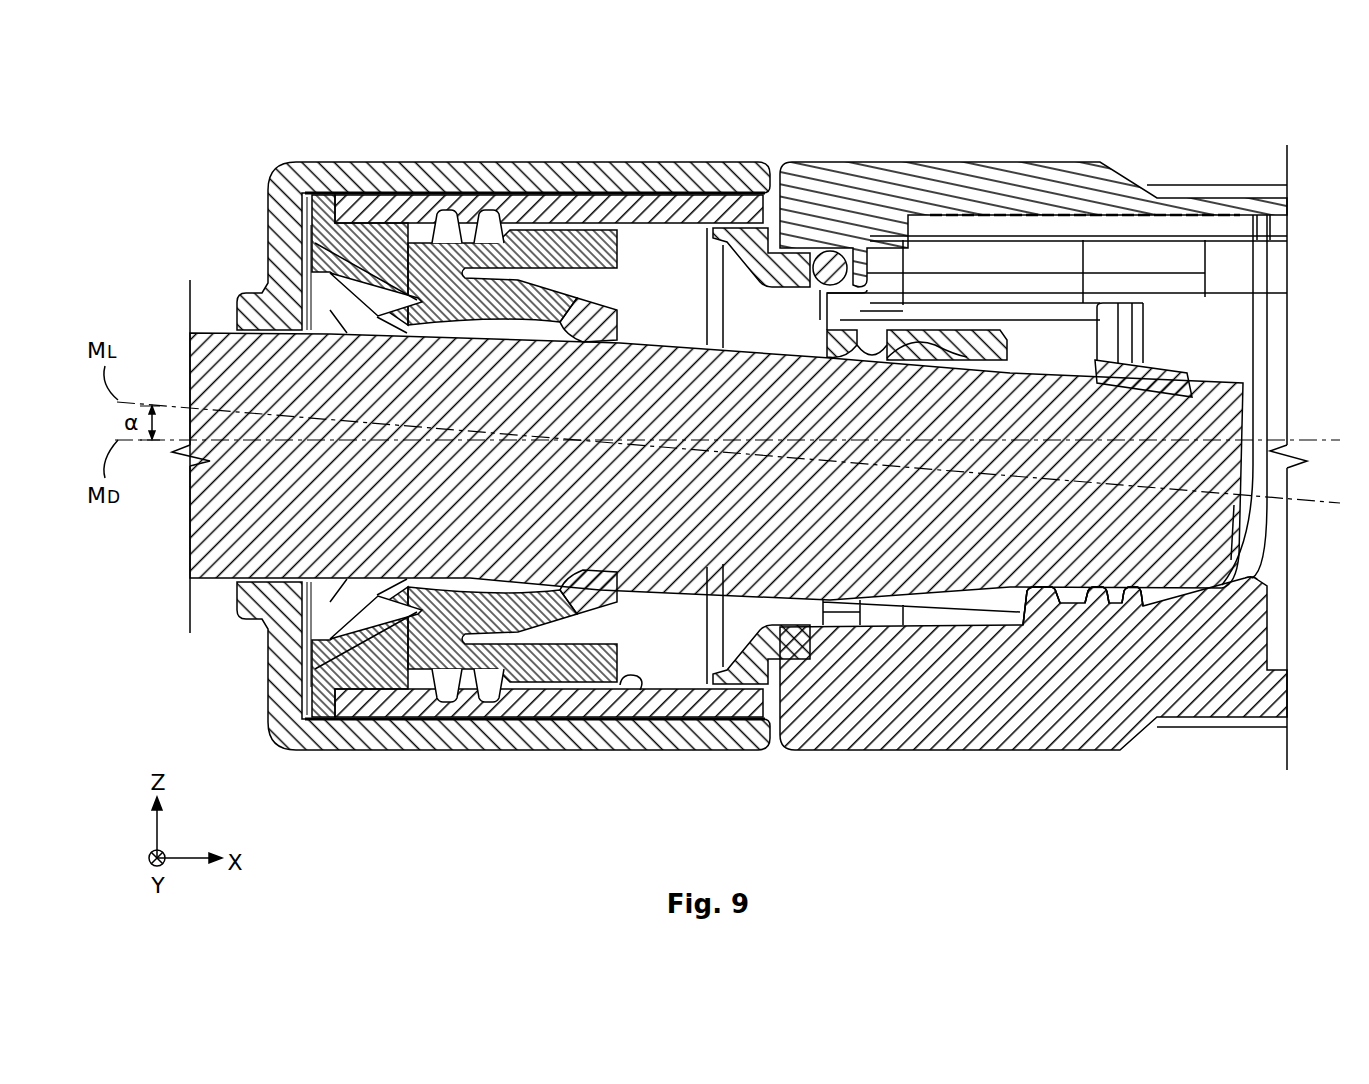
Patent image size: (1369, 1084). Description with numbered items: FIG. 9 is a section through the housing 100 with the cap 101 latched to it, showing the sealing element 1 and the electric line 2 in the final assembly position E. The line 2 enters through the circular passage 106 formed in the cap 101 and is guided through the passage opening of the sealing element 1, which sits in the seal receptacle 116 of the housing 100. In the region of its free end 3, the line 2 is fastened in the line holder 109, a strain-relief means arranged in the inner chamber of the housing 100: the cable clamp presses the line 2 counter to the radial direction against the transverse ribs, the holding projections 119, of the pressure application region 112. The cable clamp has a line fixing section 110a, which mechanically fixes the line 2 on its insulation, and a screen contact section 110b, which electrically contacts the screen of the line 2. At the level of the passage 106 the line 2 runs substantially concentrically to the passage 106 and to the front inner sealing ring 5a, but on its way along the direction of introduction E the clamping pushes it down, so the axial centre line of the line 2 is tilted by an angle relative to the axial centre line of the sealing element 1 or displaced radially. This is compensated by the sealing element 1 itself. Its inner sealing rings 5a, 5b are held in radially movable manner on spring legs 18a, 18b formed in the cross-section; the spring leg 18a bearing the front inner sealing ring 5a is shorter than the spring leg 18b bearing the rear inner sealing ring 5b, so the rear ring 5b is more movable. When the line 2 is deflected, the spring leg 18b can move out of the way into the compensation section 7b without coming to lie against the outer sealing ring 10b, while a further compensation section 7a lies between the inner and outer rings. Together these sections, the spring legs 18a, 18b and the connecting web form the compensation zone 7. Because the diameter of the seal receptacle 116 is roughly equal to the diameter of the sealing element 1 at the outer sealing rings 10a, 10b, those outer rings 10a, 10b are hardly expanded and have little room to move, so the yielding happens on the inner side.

The sealing element 1 is at (348, 667).
The electric line 2 is at (677, 488).
The free end 3 is at (1239, 507).
The front inner sealing ring 5a is at (403, 327).
The rear inner sealing ring 5b is at (607, 592).
The compensation zone 7 is at (443, 640).
The compensation section 7a is at (377, 615).
The compensation section 7b is at (597, 288).
The outer sealing ring 10a is at (367, 248).
The outer sealing ring 10b is at (580, 238).
The spring leg 18a is at (408, 300).
The spring leg 18b is at (523, 303).
The housing 100 is at (1228, 680).
The cap 101 is at (745, 160).
The circular passage 106 is at (273, 578).
The line holder 109 is at (1170, 365).
The line fixing section 110a is at (973, 340).
The screen contact section 110b is at (1123, 370).
The pressure application region 112 is at (1053, 595).
The seal receptacle 116 is at (627, 680).
The holding projections 119 is at (1090, 608).
The direction of introduction E is at (930, 142).